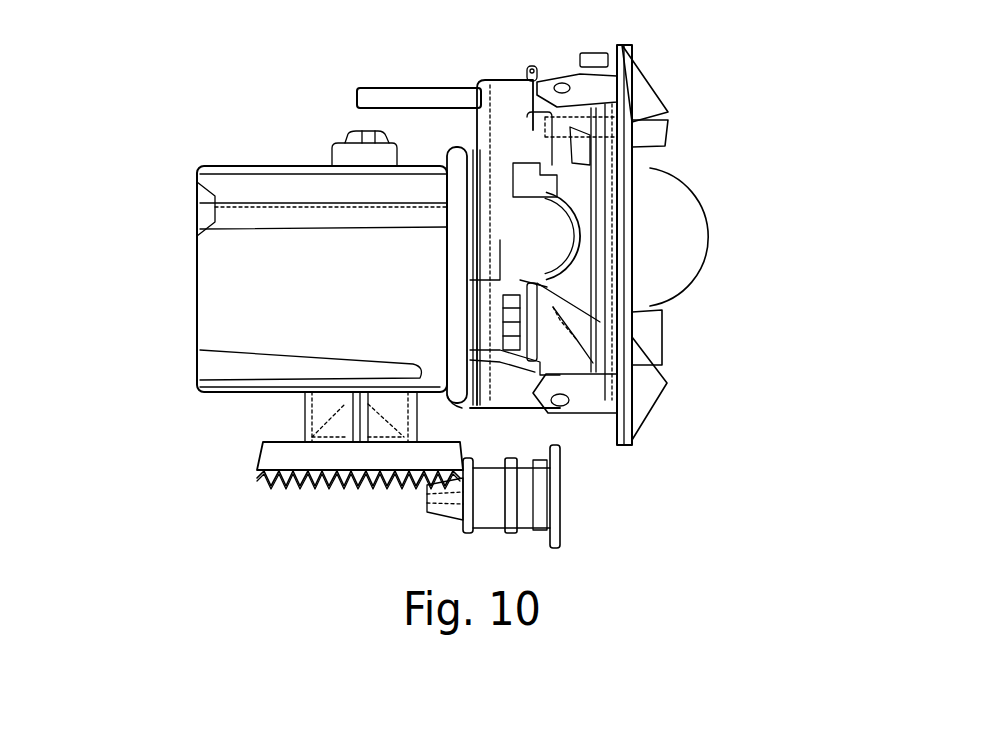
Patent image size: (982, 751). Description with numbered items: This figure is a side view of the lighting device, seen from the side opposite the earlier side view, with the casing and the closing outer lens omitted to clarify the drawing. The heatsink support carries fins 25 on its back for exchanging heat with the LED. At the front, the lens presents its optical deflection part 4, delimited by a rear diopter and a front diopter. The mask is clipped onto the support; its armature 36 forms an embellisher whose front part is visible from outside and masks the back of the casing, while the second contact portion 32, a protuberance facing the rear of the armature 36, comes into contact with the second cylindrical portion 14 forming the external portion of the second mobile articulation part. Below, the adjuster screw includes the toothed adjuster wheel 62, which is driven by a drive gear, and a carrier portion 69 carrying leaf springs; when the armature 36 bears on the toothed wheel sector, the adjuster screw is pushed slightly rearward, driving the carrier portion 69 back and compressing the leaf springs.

The fins 25 is at (300, 188).
The carrier portion 69 is at (343, 140).
The second cylindrical portion 14 is at (540, 223).
The deflection part 4 is at (677, 217).
The second contact portion 32 is at (578, 243).
The armature 36 is at (620, 317).
The adjuster wheel 62 is at (300, 460).